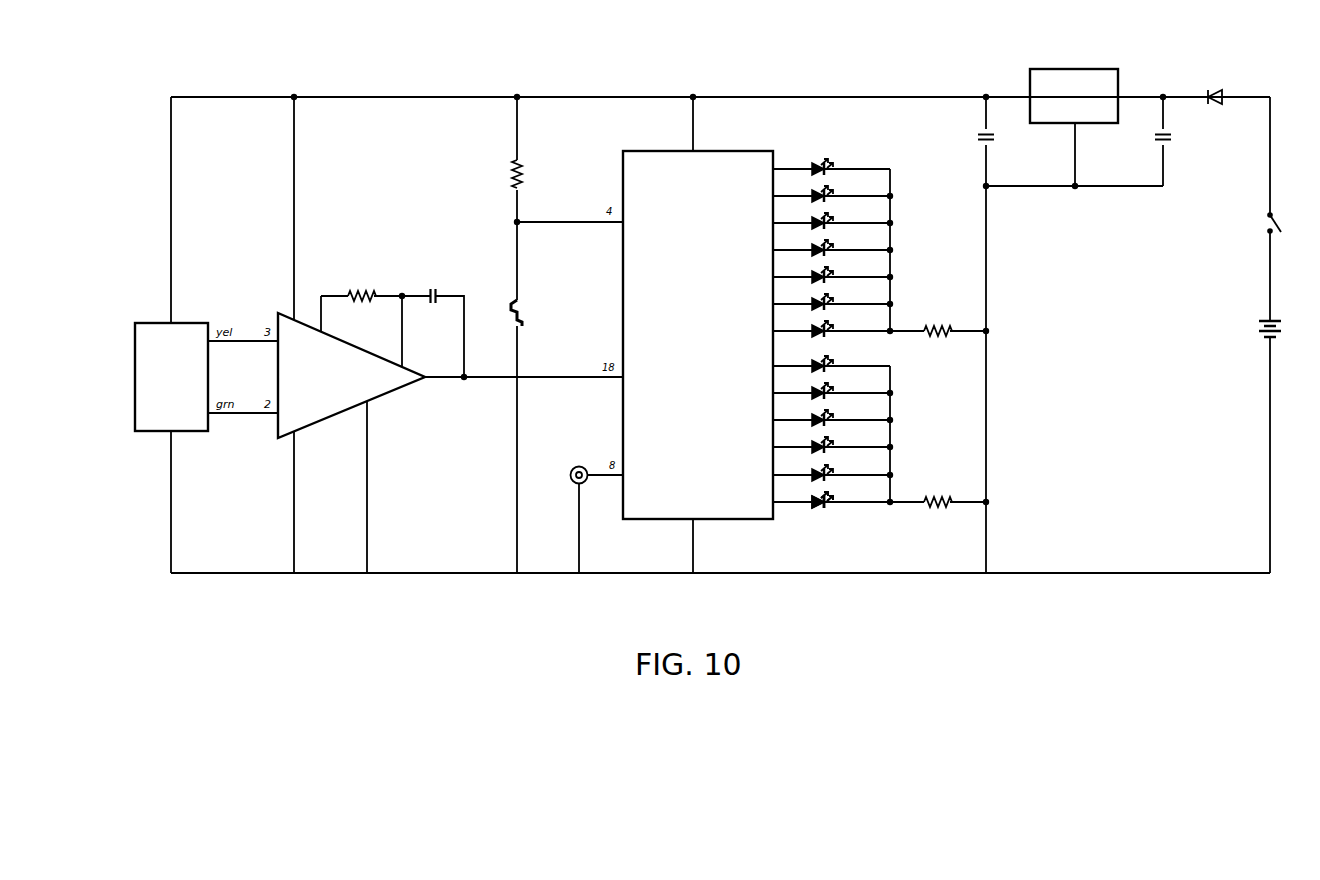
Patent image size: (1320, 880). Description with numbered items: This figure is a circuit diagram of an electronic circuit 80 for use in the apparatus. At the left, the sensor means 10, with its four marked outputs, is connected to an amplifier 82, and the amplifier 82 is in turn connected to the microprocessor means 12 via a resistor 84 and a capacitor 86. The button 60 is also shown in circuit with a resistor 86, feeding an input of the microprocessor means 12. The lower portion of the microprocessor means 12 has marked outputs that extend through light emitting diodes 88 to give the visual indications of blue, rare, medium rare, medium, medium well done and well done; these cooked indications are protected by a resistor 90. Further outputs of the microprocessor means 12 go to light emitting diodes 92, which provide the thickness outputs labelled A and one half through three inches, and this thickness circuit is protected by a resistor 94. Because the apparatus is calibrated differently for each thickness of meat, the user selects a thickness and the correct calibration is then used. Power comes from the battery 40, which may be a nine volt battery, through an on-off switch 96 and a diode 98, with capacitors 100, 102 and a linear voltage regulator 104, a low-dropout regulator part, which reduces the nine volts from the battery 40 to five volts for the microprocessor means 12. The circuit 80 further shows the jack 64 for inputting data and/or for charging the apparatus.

The electronic circuit 80 is at (372, 57).
The sensor means 10 is at (186, 336).
The amplifier 82 is at (331, 398).
The resistor 84 is at (373, 283).
The capacitor 86 is at (433, 304).
The button 60 is at (522, 309).
The microprocessor means 12 is at (698, 335).
The jack 64 is at (571, 486).
The light emitting diodes 92 is at (806, 146).
The light emitting diodes 88 is at (820, 520).
The resistor 90 is at (938, 509).
The resistor 94 is at (935, 340).
The capacitor 102 is at (979, 138).
The linear voltage regulator 104 is at (1054, 67).
The capacitor 100 is at (1167, 146).
The diode 98 is at (1217, 107).
The on-off switch 96 is at (1267, 228).
The battery 40 is at (1262, 336).